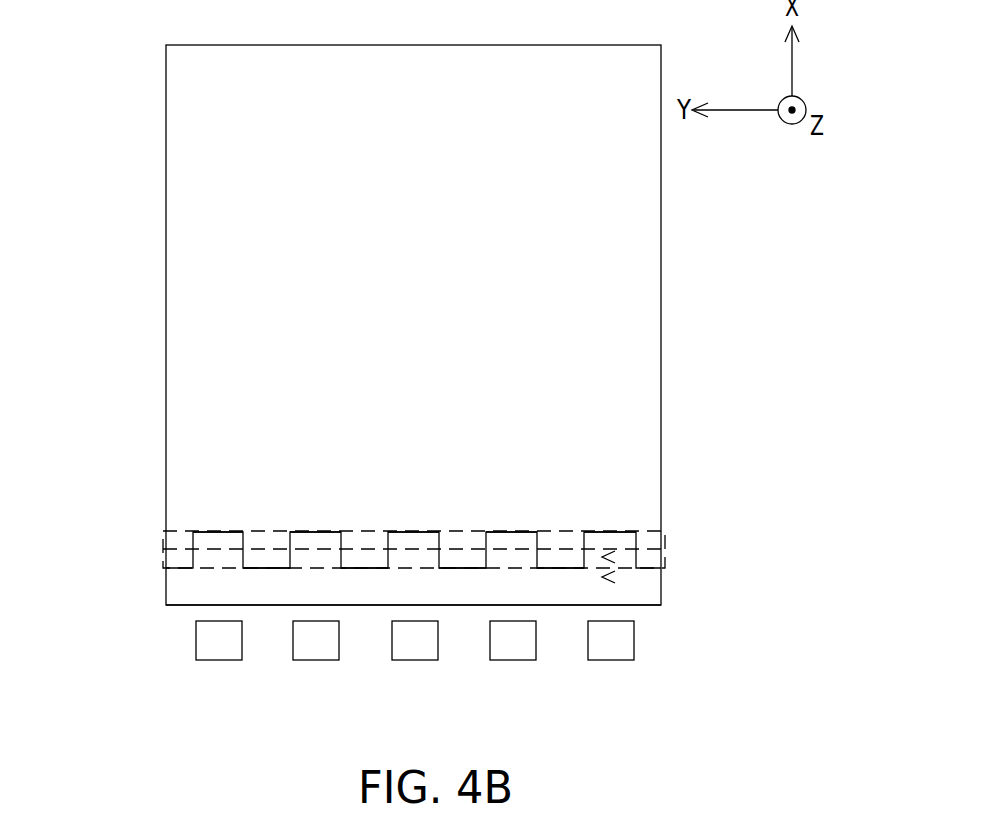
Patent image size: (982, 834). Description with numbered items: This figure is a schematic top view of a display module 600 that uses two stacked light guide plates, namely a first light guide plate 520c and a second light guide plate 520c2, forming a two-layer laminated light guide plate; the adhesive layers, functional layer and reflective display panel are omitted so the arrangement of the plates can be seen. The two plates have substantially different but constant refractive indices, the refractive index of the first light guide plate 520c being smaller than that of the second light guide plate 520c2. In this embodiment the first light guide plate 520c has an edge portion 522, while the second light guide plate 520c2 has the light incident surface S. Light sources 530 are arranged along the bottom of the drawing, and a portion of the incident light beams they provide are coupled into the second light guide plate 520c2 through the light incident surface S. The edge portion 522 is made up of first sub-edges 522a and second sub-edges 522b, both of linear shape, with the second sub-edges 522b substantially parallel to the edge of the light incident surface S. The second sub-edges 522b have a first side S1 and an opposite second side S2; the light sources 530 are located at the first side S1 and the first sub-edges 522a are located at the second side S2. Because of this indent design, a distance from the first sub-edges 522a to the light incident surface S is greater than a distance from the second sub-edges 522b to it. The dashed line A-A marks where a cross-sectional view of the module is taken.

The display module 600 is at (423, 381).
The first light guide plate 520c is at (193, 175).
The second light guide plate 520c2 is at (177, 583).
The edge portion 522 is at (374, 577).
The first sub-edges 522a is at (218, 531).
The second sub-edges 522b is at (265, 568).
The light sources 530 is at (510, 652).
The light incident surface S is at (183, 607).
The first side S1 is at (602, 577).
The second side S2 is at (602, 557).
The line A-A is at (394, 549).